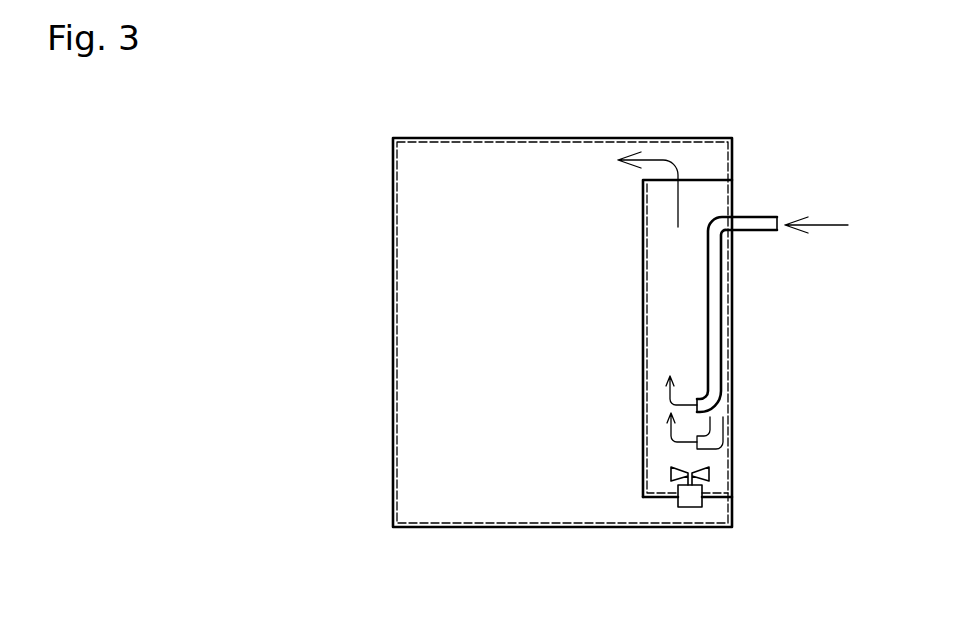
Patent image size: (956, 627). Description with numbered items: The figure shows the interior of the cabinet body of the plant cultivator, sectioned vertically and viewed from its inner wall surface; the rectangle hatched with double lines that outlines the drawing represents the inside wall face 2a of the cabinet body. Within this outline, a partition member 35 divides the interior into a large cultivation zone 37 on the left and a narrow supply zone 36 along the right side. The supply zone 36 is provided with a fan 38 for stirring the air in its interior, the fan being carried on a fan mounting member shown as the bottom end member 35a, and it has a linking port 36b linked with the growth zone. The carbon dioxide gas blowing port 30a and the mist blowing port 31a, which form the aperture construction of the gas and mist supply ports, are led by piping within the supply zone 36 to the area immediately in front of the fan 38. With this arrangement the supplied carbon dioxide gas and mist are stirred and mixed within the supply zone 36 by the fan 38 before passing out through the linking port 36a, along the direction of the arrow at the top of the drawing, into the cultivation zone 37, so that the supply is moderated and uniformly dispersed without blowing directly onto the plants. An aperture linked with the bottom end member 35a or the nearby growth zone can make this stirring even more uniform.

The inside wall face 2a is at (395, 225).
The cultivation zone 37 is at (420, 303).
The partition member 35 is at (643, 218).
The supply zone 36 is at (658, 315).
The linking port 36a is at (700, 202).
The linking port 36b is at (658, 450).
The fan 38 is at (697, 505).
The bottom end member 35a is at (660, 498).
The mist blowing port 31a is at (717, 398).
The carbon dioxide gas blowing port 30a is at (716, 443).